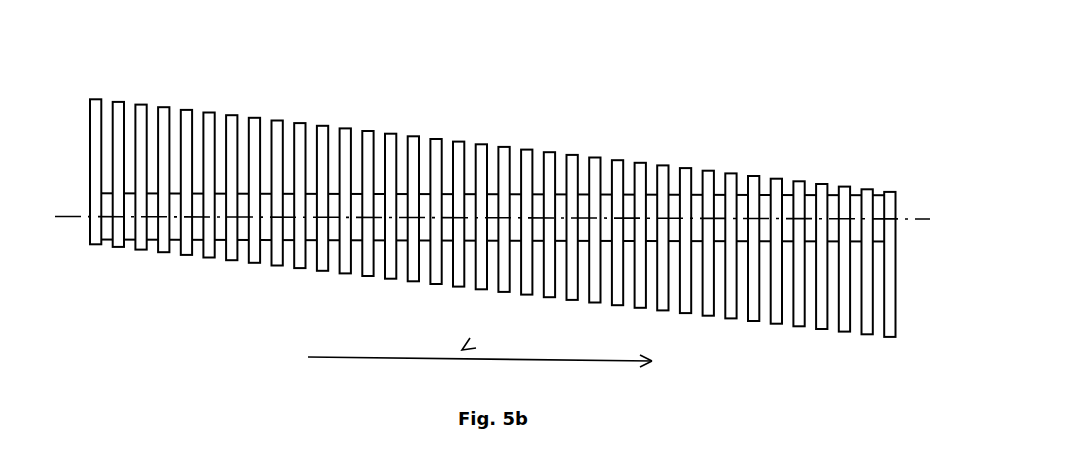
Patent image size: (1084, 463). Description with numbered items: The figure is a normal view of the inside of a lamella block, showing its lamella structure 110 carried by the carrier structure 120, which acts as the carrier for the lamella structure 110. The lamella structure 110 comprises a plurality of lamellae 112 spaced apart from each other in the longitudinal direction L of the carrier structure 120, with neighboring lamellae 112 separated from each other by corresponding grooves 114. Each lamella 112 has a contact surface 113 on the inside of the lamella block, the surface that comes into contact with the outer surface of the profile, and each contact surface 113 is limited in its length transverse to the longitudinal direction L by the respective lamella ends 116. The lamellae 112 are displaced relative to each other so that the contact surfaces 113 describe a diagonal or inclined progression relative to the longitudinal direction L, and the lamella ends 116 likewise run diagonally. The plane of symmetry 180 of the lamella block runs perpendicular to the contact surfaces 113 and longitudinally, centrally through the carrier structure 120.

The lamella structure 110 is at (475, 193).
The lamella 112 is at (436, 141).
The contact surface 113 is at (459, 156).
The groove 114 is at (377, 142).
The lamella end 116 is at (134, 100).
The carrier structure 120 is at (582, 203).
The plane of symmetry 180 is at (914, 218).